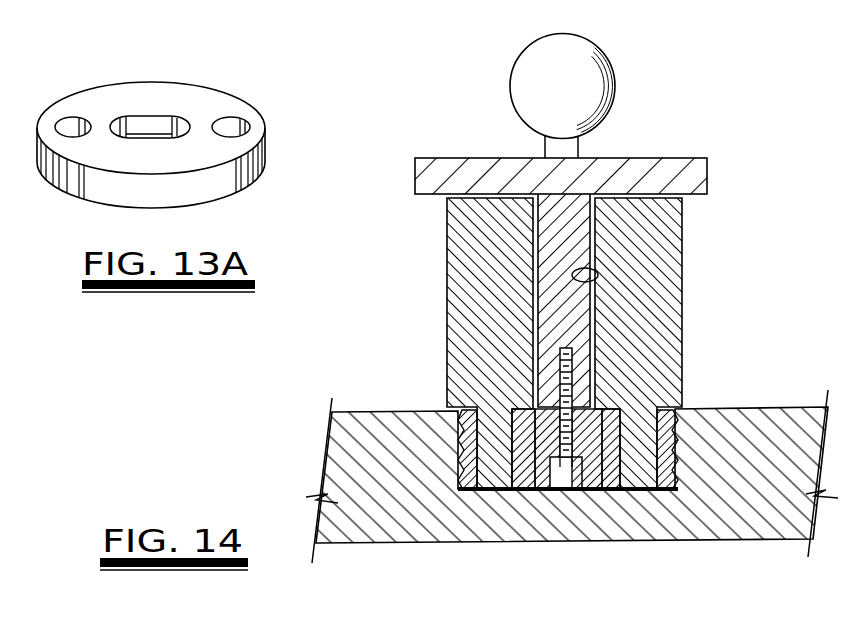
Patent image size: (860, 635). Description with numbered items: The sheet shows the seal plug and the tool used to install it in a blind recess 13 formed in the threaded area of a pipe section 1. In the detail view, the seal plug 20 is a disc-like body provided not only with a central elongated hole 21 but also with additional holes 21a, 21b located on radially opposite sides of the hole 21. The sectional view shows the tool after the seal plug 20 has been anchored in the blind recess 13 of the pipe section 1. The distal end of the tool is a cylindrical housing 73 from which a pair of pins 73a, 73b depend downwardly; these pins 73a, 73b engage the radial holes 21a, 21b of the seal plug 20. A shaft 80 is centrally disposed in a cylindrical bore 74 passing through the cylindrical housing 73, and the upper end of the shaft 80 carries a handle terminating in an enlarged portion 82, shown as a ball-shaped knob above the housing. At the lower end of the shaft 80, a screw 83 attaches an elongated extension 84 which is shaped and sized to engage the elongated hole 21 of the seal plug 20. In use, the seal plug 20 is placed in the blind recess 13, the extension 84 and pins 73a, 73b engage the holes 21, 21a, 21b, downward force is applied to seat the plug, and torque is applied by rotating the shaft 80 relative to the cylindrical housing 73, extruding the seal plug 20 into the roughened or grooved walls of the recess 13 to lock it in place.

In FIG. 14, the substrate / mounting base 1 is at (360, 452).
In FIG. 14, the blind recess 13 is at (457, 483).
In FIG. 13A, the seal plug 20 is at (153, 93).
In FIG. 14, the seal plug 20 is at (527, 473).
In FIG. 13A, the central hole 21 is at (137, 125).
In FIG. 13A, the radial hole 21a is at (68, 127).
In FIG. 13A, the radial hole 21b is at (222, 125).
In FIG. 14, the cylindrical housing 73 is at (480, 338).
In FIG. 14, the pin 73a is at (497, 467).
In FIG. 14, the pin 73b is at (642, 455).
In FIG. 14, the cylindrical bore 74 is at (598, 279).
In FIG. 14, the shaft 80 is at (570, 227).
In FIG. 14, the enlarged portion 82 is at (575, 93).
In FIG. 14, the screw 83 is at (548, 460).
In FIG. 14, the elongated extension 84 is at (596, 468).